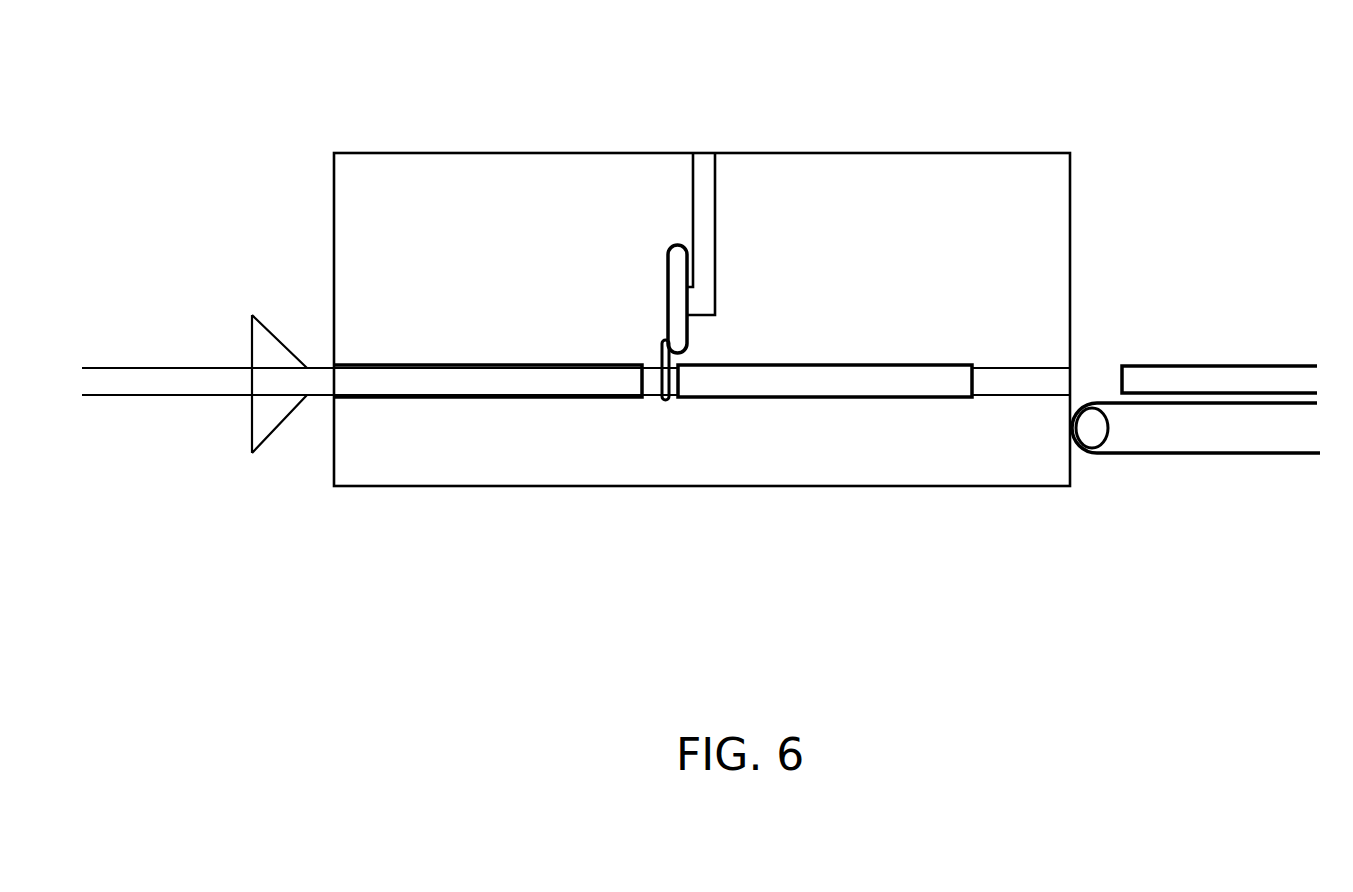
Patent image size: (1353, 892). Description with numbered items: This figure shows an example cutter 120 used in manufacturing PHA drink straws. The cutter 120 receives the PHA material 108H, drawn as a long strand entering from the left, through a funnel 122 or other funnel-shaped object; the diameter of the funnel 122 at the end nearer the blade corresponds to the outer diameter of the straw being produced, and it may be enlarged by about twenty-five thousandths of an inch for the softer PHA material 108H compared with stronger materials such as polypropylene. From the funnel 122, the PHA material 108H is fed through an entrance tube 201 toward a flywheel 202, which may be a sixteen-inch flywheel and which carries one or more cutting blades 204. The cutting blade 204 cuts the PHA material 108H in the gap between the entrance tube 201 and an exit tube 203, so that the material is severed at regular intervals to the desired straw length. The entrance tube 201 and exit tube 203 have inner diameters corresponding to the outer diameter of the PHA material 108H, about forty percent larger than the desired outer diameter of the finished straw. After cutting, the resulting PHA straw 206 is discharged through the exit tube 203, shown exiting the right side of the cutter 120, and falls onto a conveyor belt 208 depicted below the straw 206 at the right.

The cutter 120 is at (334, 170).
The funnel 122 is at (283, 336).
The PHA material 108H is at (210, 397).
The entrance tube 201 is at (463, 363).
The flywheel 202 is at (668, 250).
The exit tube 203 is at (888, 363).
The cutting blade 204 is at (661, 350).
The PHA straw 206 is at (1187, 366).
The conveyor belt 208 is at (1122, 462).